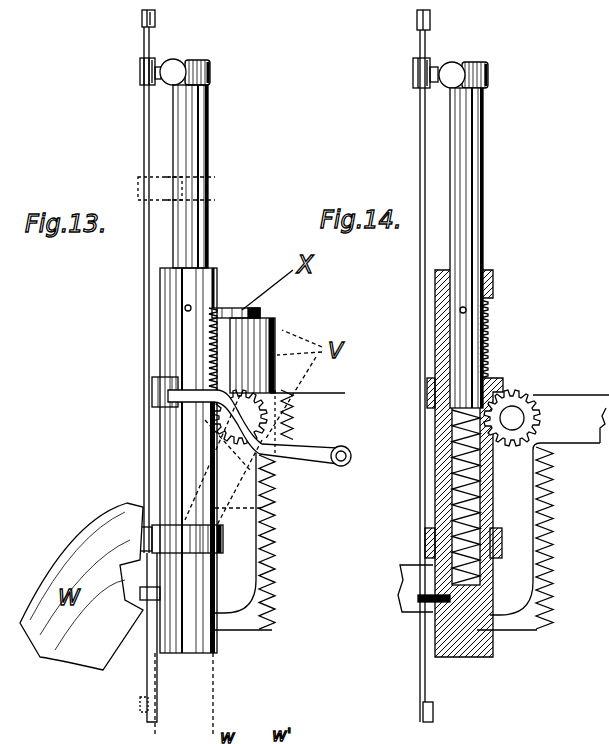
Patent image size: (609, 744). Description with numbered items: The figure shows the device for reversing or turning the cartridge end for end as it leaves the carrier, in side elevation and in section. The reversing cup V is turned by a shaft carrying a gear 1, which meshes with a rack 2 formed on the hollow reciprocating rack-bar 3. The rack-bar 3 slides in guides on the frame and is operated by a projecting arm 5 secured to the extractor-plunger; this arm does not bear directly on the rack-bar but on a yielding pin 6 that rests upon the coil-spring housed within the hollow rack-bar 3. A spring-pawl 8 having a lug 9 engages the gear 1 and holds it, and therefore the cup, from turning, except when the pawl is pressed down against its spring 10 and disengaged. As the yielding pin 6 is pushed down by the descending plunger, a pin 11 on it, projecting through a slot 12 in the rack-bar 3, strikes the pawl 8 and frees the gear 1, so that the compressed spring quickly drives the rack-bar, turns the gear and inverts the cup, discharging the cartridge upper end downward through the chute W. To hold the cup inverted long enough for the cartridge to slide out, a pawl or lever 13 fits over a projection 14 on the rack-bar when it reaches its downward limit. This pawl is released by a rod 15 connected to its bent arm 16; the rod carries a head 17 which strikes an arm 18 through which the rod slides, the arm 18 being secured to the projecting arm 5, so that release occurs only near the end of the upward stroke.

In FIG. 13, the gear 1 is at (258, 405).
In FIG. 14, the gear 1 is at (513, 405).
In FIG. 13, the rack 2 is at (217, 340).
In FIG. 14, the rack 2 is at (490, 345).
In FIG. 13, the hollow reciprocating rack-bar 3 is at (188, 460).
In FIG. 14, the hollow reciprocating rack-bar 3 is at (493, 288).
In FIG. 13, the projecting arm 5 is at (173, 72).
In FIG. 14, the projecting arm 5 is at (452, 75).
In FIG. 13, the yielding pin 6 is at (209, 150).
In FIG. 14, the yielding pin 6 is at (484, 230).
In FIG. 13, the spring-pawl 8 is at (170, 397).
In FIG. 13, the lug 9 is at (260, 442).
In FIG. 14, the lug 9 is at (480, 485).
In FIG. 13, the spring 10 is at (294, 412).
In FIG. 13, the pin 11 is at (192, 304).
In FIG. 14, the pin 11 is at (490, 308).
In FIG. 13, the slot 12 is at (247, 317).
In FIG. 13, the pawl or lever 13 is at (158, 688).
In FIG. 13, the projection or pin 14 is at (181, 539).
In FIG. 13, the rod 15 is at (144, 450).
In FIG. 14, the bent arm 16 is at (420, 130).
In FIG. 13, the head or enlargement 17 is at (156, 20).
In FIG. 14, the head or enlargement 17 is at (433, 20).
In FIG. 14, the arm 18 is at (432, 62).